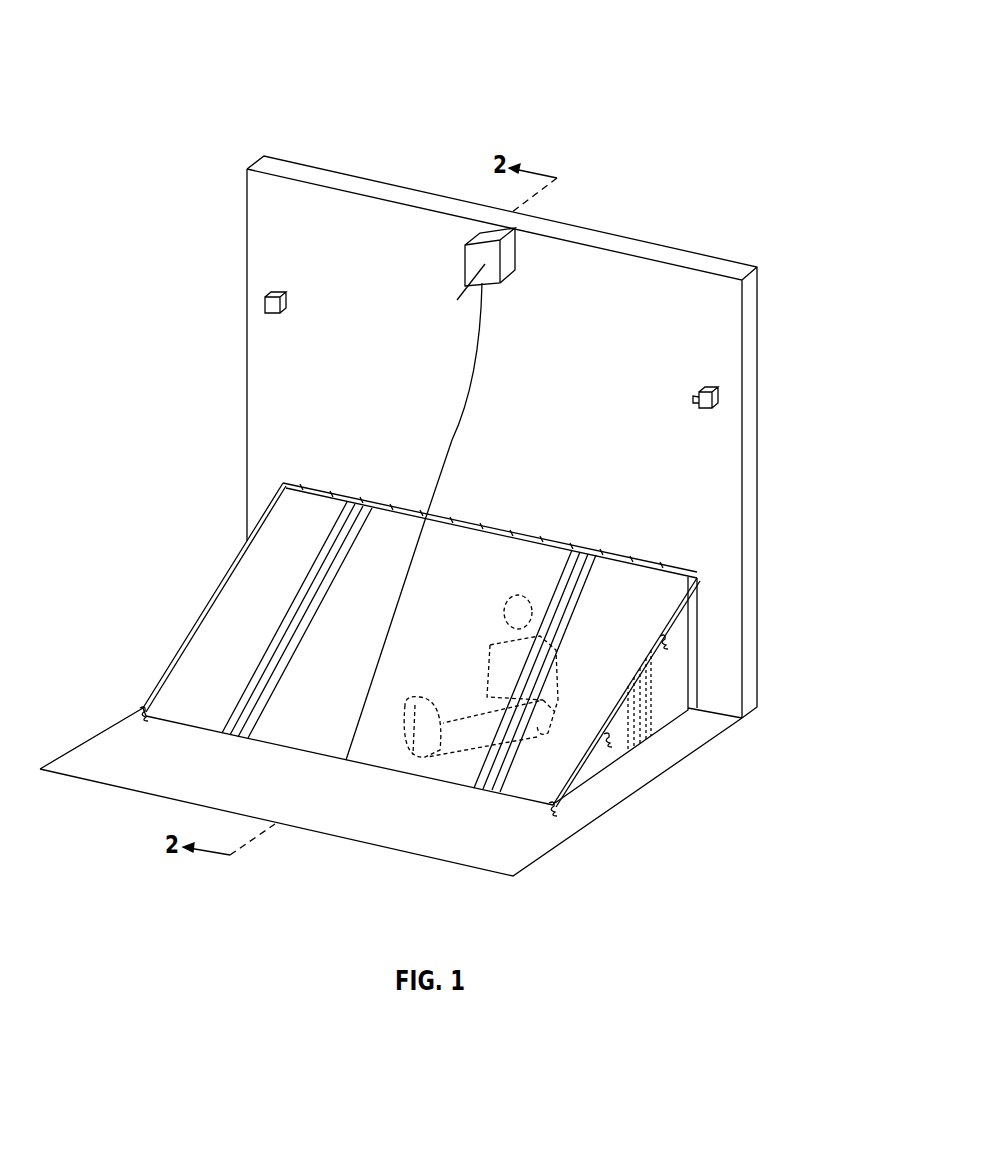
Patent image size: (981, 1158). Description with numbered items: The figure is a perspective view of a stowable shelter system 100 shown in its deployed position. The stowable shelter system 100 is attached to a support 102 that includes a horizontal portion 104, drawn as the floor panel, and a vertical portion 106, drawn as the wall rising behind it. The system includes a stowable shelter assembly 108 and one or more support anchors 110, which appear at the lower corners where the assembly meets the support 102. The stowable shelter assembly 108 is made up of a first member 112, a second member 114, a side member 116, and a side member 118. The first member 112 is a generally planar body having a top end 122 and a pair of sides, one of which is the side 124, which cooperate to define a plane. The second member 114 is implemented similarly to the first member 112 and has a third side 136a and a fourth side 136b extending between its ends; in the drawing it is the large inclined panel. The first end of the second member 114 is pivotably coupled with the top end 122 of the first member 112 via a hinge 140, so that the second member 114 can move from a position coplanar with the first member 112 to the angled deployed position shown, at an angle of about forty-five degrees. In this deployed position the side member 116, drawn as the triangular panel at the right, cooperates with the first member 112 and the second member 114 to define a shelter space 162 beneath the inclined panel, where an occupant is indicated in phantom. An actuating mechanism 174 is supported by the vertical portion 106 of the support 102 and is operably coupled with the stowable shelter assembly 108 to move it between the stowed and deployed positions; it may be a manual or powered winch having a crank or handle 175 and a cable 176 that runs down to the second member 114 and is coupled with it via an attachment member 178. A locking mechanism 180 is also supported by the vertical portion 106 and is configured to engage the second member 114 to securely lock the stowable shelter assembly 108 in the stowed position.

The stowable shelter system 100 is at (179, 44).
The support 102 is at (112, 726).
The horizontal portion 104 is at (152, 797).
The vertical portion 106 is at (248, 333).
The stowable shelter assembly 108 is at (430, 645).
The support anchor 110 is at (143, 718).
The first member 112 is at (698, 645).
The second member 114 is at (640, 671).
The side member 116 is at (603, 773).
The side member 118 is at (194, 619).
The top end 122 is at (700, 580).
The side 124 is at (700, 616).
The third side 136a is at (620, 712).
The fourth side 136b is at (168, 660).
The hinge 140 is at (653, 563).
The shelter space 162 is at (298, 746).
The actuating mechanism 174 is at (464, 256).
The crank or handle 175 is at (463, 296).
The cable 176 is at (470, 402).
The attachment member 178 is at (347, 761).
The locking mechanism 180 is at (266, 306).